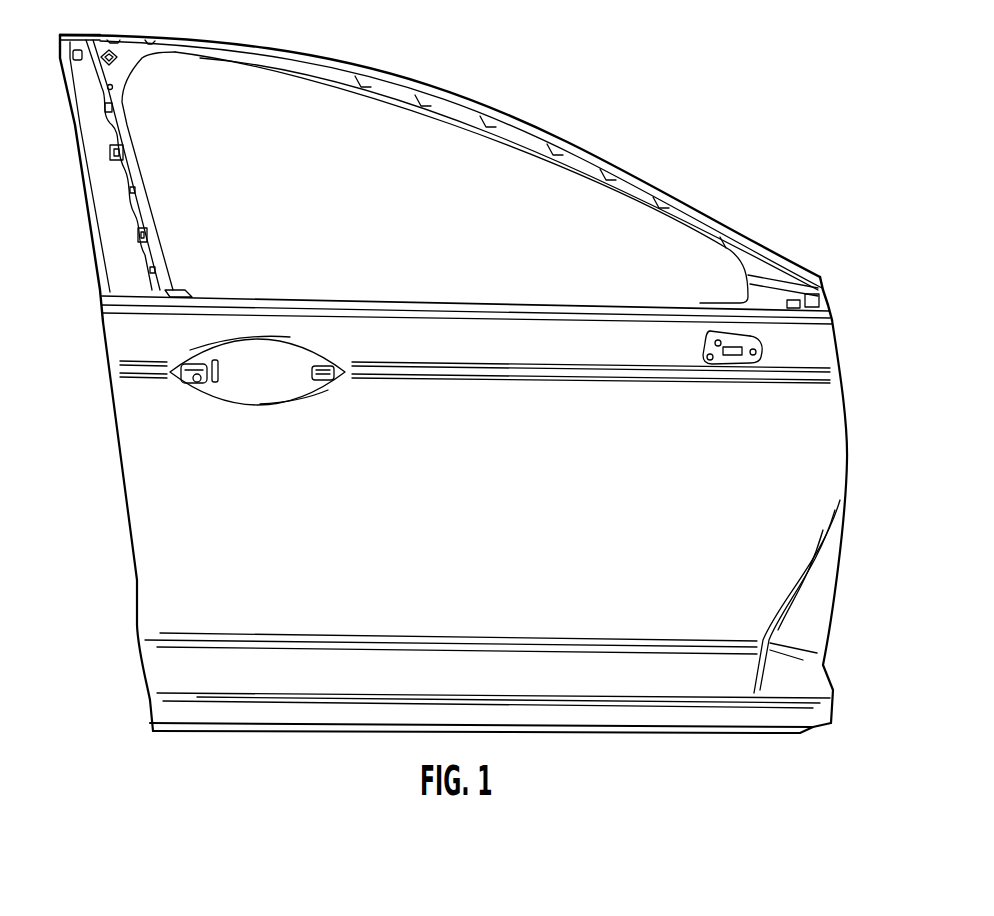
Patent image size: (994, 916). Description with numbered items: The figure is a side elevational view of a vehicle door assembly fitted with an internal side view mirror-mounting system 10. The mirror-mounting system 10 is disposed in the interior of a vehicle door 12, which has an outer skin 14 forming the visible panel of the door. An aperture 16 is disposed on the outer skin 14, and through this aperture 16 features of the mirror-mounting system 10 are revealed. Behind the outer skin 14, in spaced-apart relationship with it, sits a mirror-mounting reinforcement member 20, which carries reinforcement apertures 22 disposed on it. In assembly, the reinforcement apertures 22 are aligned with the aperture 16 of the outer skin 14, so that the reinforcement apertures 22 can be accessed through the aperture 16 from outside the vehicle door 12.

The internal side view mirror-mounting system 10 is at (770, 352).
The vehicle door 12 is at (665, 152).
The outer skin 14 is at (471, 526).
The aperture 16 is at (750, 334).
The mirror-mounting reinforcement member 20 is at (718, 331).
The reinforcement apertures 22 is at (715, 344).